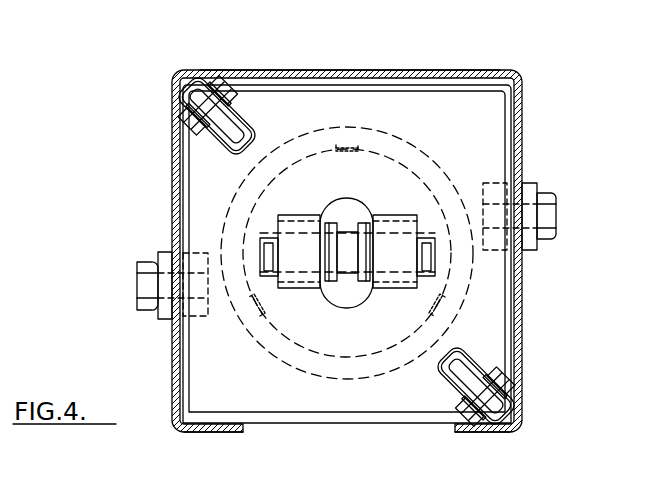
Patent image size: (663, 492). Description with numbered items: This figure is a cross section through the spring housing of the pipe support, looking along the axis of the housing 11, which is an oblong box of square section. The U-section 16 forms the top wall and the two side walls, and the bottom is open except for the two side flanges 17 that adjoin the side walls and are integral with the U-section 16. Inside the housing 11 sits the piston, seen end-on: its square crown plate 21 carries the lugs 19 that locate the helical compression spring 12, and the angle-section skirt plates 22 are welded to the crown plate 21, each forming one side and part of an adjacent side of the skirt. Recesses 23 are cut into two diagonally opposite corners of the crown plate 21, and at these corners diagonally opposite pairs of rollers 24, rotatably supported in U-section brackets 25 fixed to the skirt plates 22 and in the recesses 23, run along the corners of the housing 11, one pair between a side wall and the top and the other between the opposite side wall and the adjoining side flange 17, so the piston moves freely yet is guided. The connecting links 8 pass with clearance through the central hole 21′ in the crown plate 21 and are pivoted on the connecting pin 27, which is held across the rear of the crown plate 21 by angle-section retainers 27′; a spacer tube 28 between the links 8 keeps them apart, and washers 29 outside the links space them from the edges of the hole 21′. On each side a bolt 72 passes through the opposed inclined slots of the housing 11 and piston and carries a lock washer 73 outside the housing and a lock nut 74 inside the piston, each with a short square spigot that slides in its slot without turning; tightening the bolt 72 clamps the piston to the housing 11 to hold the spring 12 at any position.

The connecting links 8 is at (384, 229).
The housing 11 is at (176, 184).
The helical compression spring 12 is at (318, 126).
The U-section 16 is at (291, 71).
The side flanges 17 is at (207, 430).
The lugs 19 is at (348, 145).
The crown plate 21 is at (326, 380).
The central hole 21′ is at (360, 303).
The skirt plates 22 is at (186, 215).
The recesses 23 is at (240, 153).
The rollers 24 is at (190, 88).
The U-section brackets 25 is at (197, 123).
The connecting pin 27 is at (260, 243).
The angle-section retainers 27′ is at (292, 228).
The spacer tube 28 is at (350, 262).
The washers 29 is at (330, 222).
The bolt 72 is at (548, 216).
The lock washer 73 is at (538, 244).
The lock nut 74 is at (521, 186).